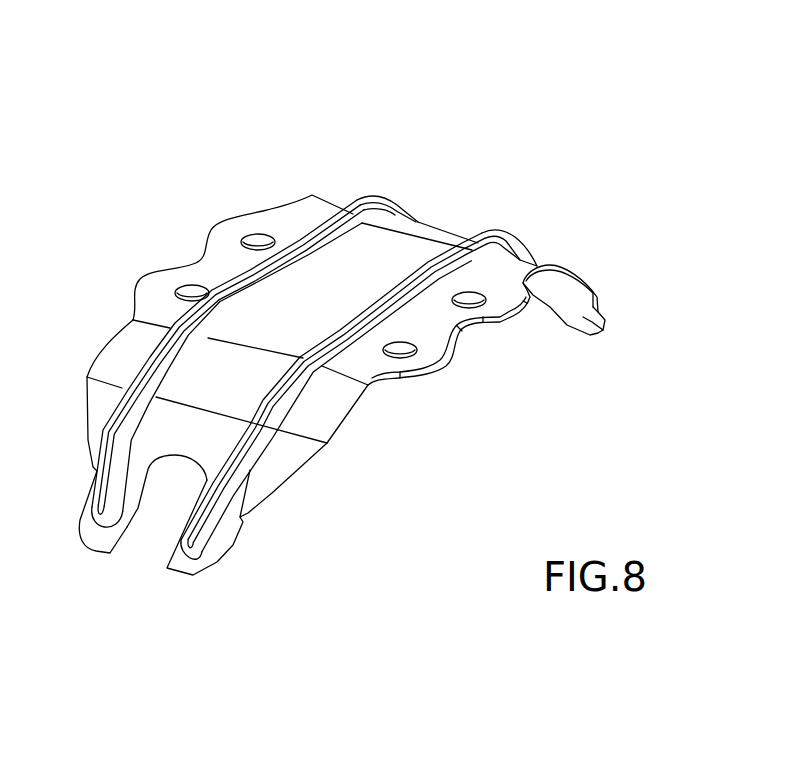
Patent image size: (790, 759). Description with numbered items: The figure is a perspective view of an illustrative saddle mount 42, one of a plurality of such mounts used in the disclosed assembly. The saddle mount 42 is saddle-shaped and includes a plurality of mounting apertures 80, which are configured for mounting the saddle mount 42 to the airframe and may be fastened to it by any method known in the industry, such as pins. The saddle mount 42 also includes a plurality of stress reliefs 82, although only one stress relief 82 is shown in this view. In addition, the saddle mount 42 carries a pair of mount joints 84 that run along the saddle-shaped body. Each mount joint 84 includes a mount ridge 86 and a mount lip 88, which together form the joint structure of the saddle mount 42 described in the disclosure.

The saddle mount 42 is at (209, 160).
The mounting apertures 80 is at (261, 235).
The stress relief 82 is at (135, 512).
The mount joints 84 is at (370, 180).
The mount ridge 86 is at (446, 255).
The mount lip 88 is at (440, 272).